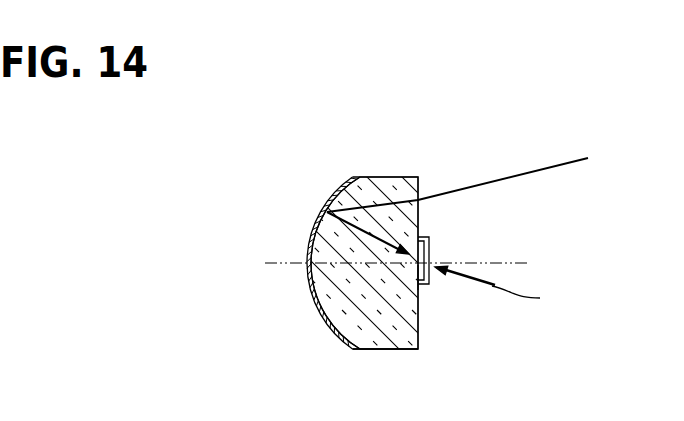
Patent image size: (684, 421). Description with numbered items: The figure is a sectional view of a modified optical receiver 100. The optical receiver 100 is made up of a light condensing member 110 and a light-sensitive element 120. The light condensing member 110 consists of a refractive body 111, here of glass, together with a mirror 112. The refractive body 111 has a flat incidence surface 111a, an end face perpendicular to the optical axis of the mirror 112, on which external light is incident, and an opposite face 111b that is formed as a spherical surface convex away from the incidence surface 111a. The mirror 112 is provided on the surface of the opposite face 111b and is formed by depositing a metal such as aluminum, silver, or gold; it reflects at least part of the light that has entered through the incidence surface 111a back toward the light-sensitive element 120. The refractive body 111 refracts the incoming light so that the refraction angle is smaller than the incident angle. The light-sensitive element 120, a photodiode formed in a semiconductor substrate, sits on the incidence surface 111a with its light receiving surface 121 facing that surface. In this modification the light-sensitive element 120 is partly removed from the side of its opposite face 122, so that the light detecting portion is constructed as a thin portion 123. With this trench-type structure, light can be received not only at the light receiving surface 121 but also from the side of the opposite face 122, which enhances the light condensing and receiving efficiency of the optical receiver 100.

The optical receiver 100 is at (440, 168).
The light condensing member 110 is at (393, 242).
The refractive body 111 is at (393, 267).
The incidence surface 111a is at (420, 349).
The opposite face 111b is at (313, 276).
The mirror 112 is at (328, 237).
The light-sensitive element 120 is at (464, 273).
The light receiving surface 121 is at (416, 282).
The opposite face 122 is at (438, 281).
The thin portion 123 is at (427, 257).